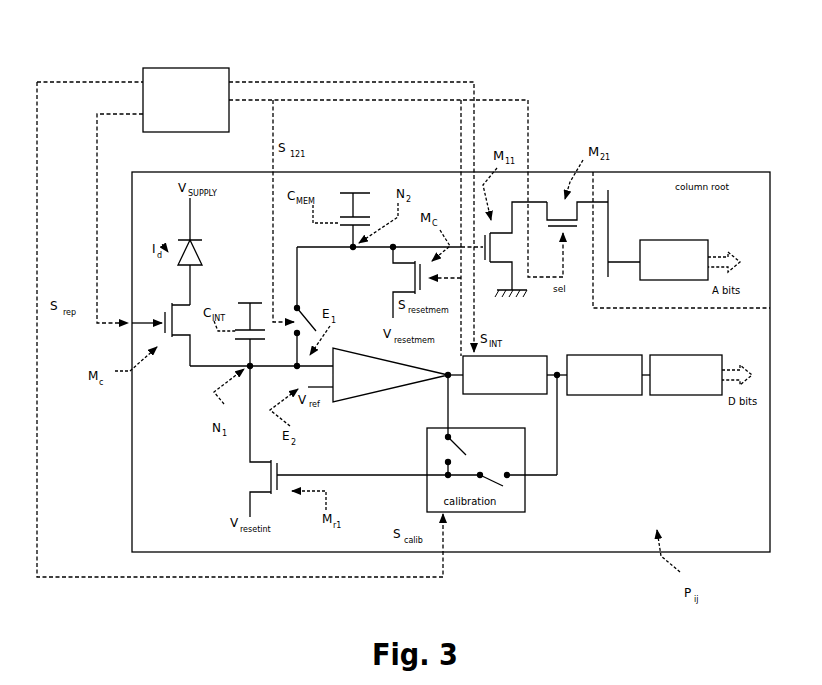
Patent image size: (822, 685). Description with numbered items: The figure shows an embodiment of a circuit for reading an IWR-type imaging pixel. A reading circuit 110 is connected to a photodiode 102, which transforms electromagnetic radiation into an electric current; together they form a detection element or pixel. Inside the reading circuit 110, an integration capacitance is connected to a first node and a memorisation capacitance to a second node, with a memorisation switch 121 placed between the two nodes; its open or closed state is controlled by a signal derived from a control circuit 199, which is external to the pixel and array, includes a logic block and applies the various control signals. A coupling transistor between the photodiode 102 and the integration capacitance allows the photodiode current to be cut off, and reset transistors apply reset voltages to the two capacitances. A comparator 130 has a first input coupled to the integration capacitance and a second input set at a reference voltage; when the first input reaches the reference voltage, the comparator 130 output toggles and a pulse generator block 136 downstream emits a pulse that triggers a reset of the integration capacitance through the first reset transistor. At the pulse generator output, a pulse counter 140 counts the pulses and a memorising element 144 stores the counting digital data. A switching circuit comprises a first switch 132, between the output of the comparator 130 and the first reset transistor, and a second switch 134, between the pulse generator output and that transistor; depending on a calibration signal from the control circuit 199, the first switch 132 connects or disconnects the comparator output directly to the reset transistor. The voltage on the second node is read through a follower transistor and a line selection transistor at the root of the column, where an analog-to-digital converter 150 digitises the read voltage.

The control circuit 199 is at (192, 68).
The photodiode 102 is at (206, 252).
The reading circuit 110 is at (177, 381).
The memorisation switch 121 is at (306, 304).
The comparator 130 is at (393, 392).
The first switch 132 is at (471, 449).
The second switch 134 is at (505, 481).
The pulse generator 136 is at (536, 355).
The pulse counter 140 is at (599, 396).
The memorising element 144 is at (695, 397).
The analog-to-digital converter 150 is at (657, 240).